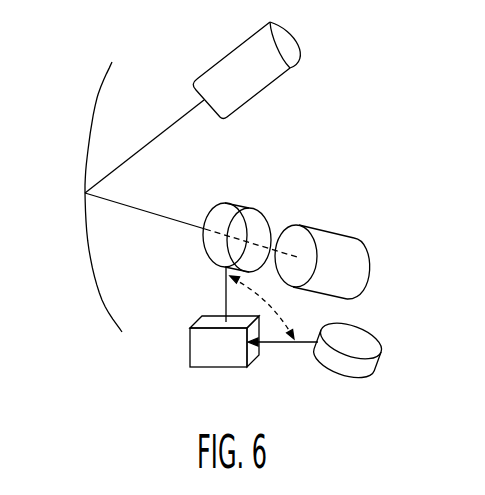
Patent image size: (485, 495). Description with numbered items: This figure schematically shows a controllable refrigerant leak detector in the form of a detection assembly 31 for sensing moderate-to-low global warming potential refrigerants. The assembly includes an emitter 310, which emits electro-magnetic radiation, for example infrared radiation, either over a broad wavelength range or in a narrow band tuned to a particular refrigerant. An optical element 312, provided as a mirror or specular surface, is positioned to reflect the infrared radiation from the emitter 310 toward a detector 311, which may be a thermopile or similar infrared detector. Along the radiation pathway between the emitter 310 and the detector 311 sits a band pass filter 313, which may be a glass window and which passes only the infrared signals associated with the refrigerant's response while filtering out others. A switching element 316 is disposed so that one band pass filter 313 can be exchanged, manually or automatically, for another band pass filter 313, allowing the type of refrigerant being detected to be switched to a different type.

The detection assembly 31 is at (167, 113).
The emitter 310 is at (275, 50).
The detector 311 is at (370, 260).
The optical element 312 is at (97, 98).
The band pass filter 313 is at (255, 217).
The switching element 316 is at (192, 350).